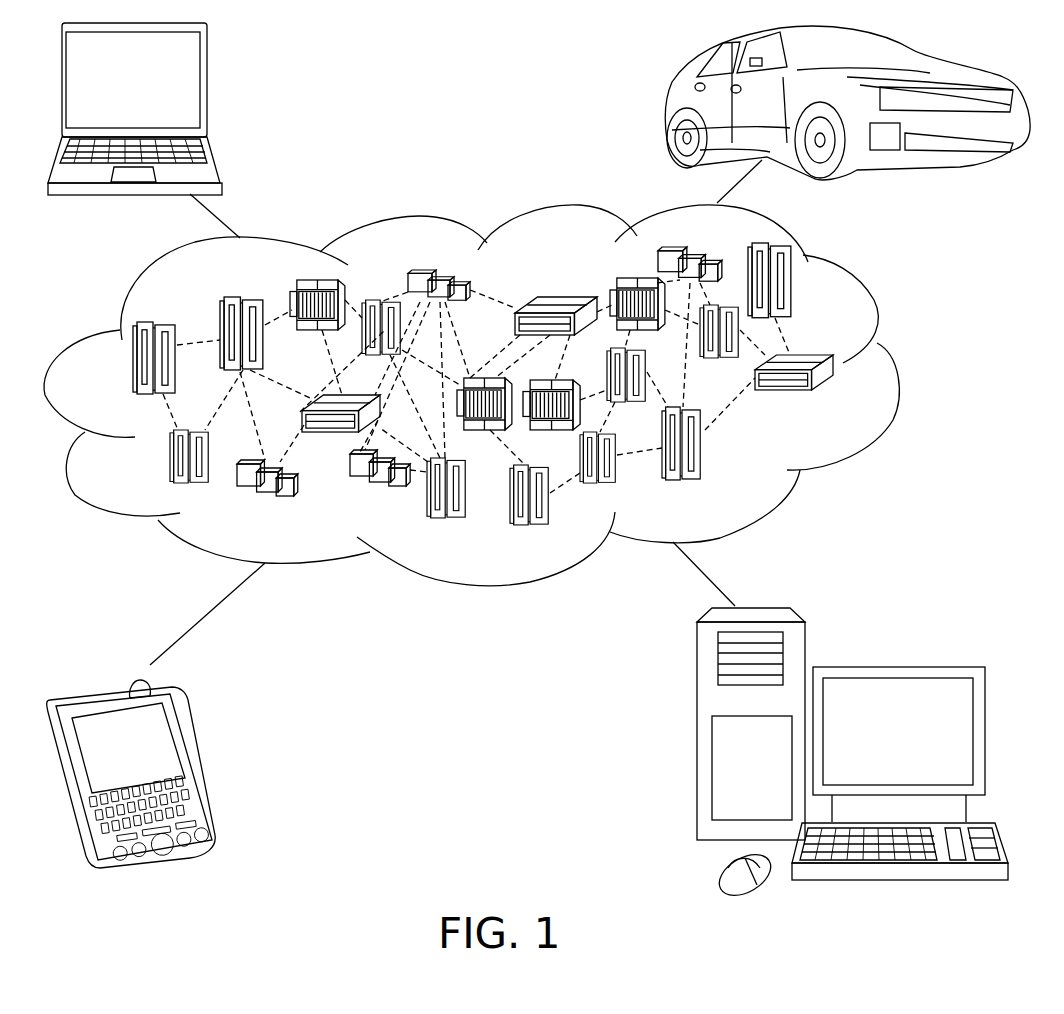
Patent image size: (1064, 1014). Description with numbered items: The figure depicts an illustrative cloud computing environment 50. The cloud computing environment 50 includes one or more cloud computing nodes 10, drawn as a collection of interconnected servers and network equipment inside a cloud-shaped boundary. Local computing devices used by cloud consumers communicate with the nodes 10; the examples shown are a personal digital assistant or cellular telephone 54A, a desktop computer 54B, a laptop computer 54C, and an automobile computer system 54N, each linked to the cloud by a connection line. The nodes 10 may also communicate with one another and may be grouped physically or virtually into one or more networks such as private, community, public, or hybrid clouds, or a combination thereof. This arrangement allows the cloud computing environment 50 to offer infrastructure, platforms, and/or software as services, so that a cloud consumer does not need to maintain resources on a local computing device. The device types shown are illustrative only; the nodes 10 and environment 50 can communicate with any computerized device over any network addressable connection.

The cloud computing node 10 is at (850, 404).
The cloud computing environment 50 is at (898, 368).
The personal digital assistant or cellular telephone 54A is at (200, 757).
The desktop computer 54B is at (895, 666).
The laptop computer 54C is at (205, 87).
The automobile computer system 54N is at (670, 107).